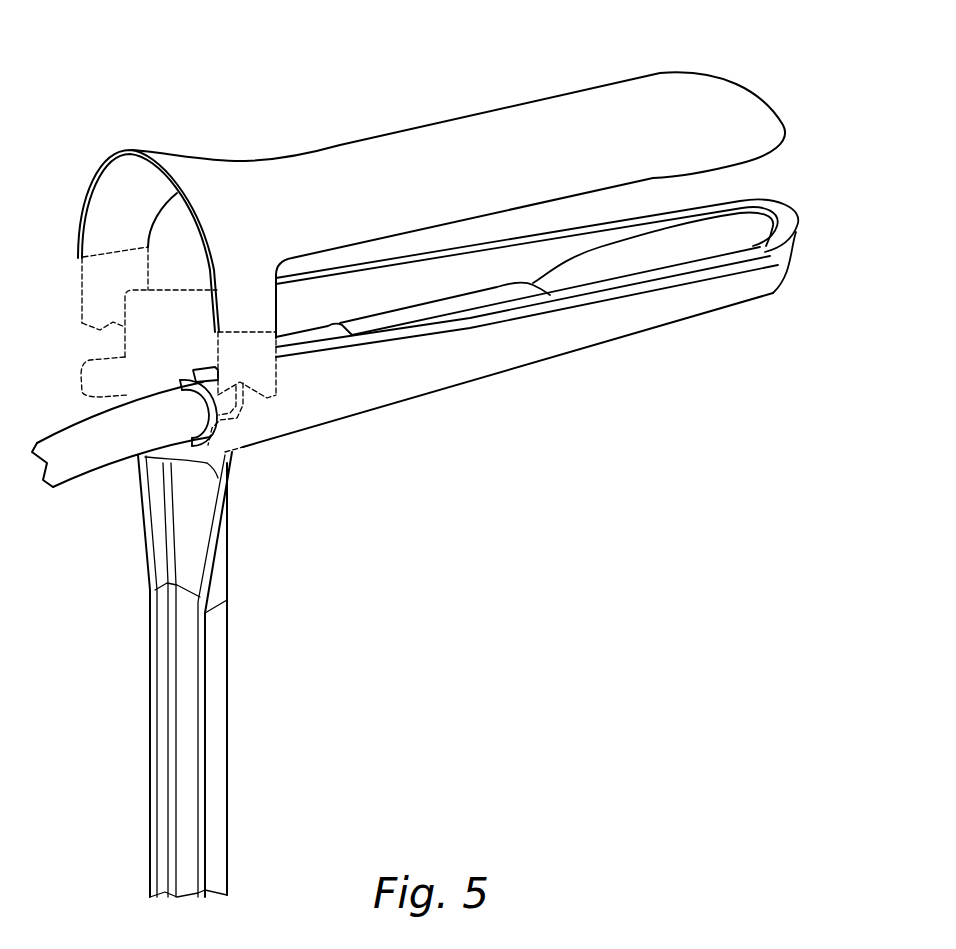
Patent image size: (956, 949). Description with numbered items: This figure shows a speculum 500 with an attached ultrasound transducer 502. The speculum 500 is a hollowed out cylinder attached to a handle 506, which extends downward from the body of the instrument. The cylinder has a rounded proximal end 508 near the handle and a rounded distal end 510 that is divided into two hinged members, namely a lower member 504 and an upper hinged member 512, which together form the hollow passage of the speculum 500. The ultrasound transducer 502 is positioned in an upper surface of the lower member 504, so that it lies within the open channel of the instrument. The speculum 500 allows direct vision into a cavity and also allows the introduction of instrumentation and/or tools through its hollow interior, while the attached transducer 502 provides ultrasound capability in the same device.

The speculum 500 is at (233, 74).
The ultrasound transducer 502 is at (650, 252).
The lower member 504 is at (430, 370).
The handle 506 is at (185, 692).
The rounded proximal end 508 is at (150, 319).
The rounded distal end 510 is at (783, 175).
The hinged member 512 is at (453, 132).